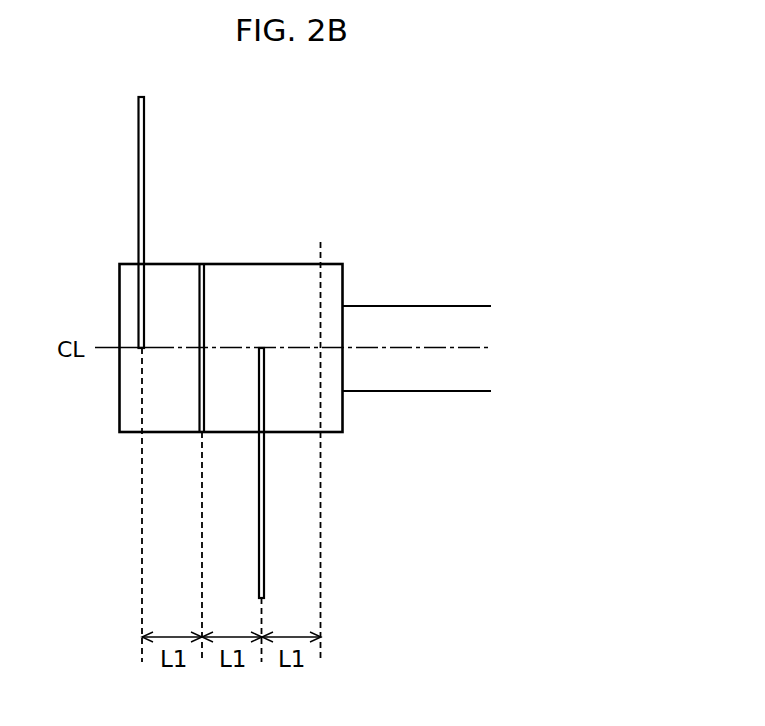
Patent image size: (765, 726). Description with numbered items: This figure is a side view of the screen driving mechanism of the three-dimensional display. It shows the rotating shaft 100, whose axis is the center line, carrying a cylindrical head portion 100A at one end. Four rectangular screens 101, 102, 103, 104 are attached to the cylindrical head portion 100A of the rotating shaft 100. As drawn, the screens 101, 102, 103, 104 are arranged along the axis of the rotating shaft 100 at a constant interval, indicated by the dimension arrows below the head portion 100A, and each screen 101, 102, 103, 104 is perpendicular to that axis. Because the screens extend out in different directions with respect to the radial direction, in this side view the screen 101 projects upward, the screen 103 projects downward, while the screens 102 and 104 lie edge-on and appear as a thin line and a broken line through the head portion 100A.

The rotating shaft 100 is at (428, 393).
The cylindrical head portion 100A is at (343, 285).
The screen 101 is at (144, 153).
The screen 102 is at (200, 263).
The screen 103 is at (265, 538).
The screen 104 is at (321, 439).